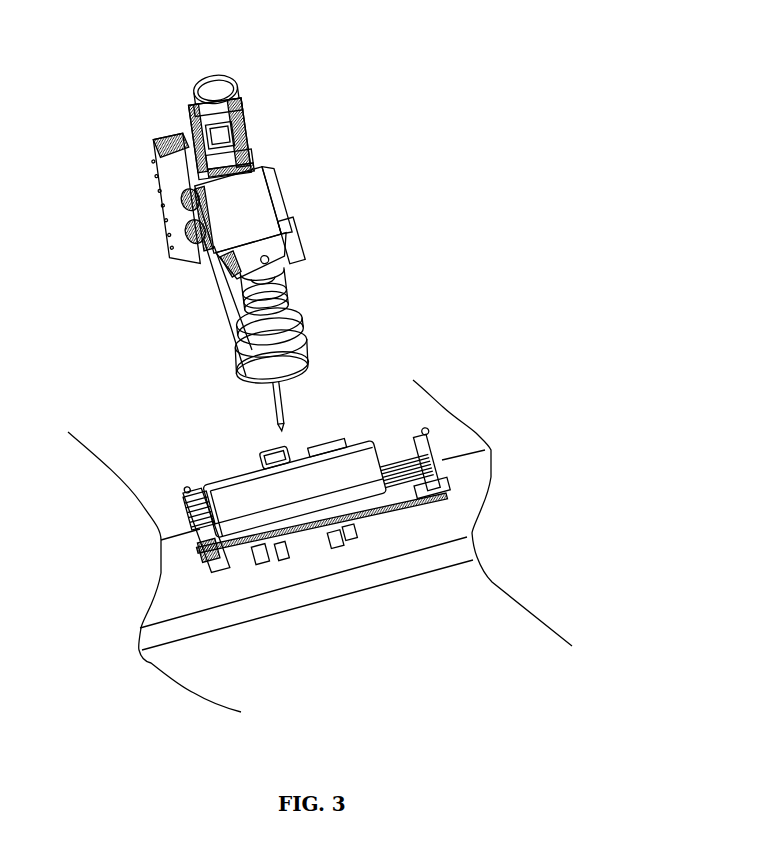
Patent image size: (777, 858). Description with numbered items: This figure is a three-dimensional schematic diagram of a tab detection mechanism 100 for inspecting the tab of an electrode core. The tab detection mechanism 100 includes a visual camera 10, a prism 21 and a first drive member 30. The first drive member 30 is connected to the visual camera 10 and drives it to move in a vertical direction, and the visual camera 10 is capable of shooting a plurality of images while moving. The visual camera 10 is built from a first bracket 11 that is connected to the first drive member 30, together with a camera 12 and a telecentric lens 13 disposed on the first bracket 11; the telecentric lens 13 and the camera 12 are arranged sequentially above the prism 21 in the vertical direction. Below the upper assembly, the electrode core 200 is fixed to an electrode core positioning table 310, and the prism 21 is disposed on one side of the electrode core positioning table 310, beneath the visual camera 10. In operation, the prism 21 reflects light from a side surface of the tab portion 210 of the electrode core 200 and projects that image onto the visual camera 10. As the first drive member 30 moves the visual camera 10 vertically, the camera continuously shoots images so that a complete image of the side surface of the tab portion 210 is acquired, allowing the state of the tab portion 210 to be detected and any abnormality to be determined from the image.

The tab detection mechanism 100 is at (278, 55).
The first drive member 30 is at (248, 134).
The visual camera 10 is at (372, 193).
The first bracket 11 is at (257, 222).
The camera 12 is at (290, 270).
The telecentric lens 13 is at (304, 323).
The electrode core 200 is at (332, 477).
The tab portion 210 is at (333, 442).
The prism 21 is at (272, 445).
The electrode core positioning table 310 is at (292, 550).